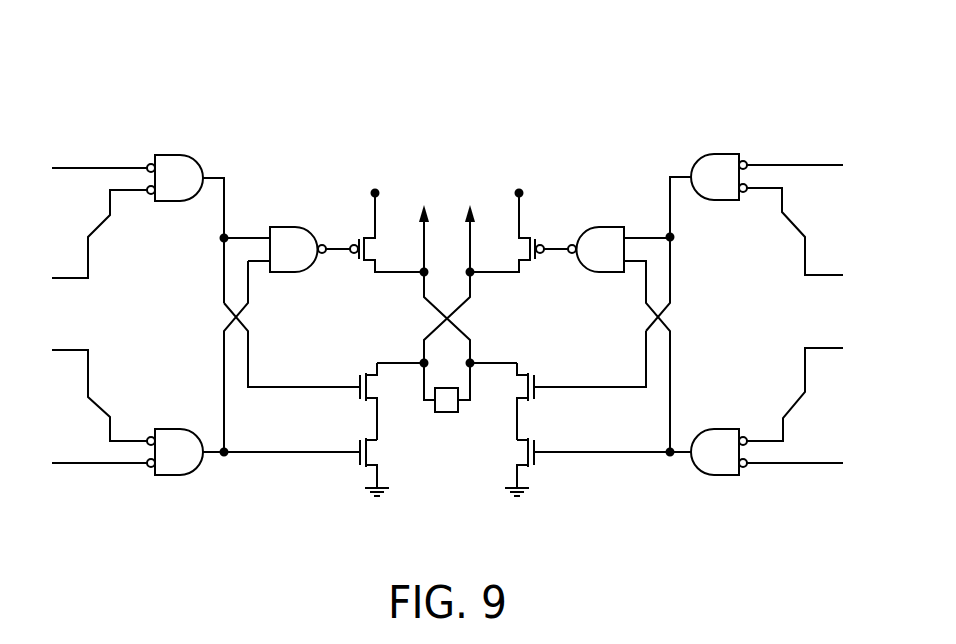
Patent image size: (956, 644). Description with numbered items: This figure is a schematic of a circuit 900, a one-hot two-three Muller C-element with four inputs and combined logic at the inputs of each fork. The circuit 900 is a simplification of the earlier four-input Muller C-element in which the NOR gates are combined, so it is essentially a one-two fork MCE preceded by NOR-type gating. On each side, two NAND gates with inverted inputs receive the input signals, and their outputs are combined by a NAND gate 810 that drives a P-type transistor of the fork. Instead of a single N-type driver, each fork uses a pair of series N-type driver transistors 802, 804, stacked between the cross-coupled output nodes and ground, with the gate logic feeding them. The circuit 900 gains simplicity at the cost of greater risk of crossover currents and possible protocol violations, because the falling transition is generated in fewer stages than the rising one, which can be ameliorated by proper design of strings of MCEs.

The circuit 900 is at (564, 151).
The NAND gate 810 is at (284, 227).
The N-type driver transistor 802 is at (358, 383).
The N-type driver transistor 804 is at (355, 459).